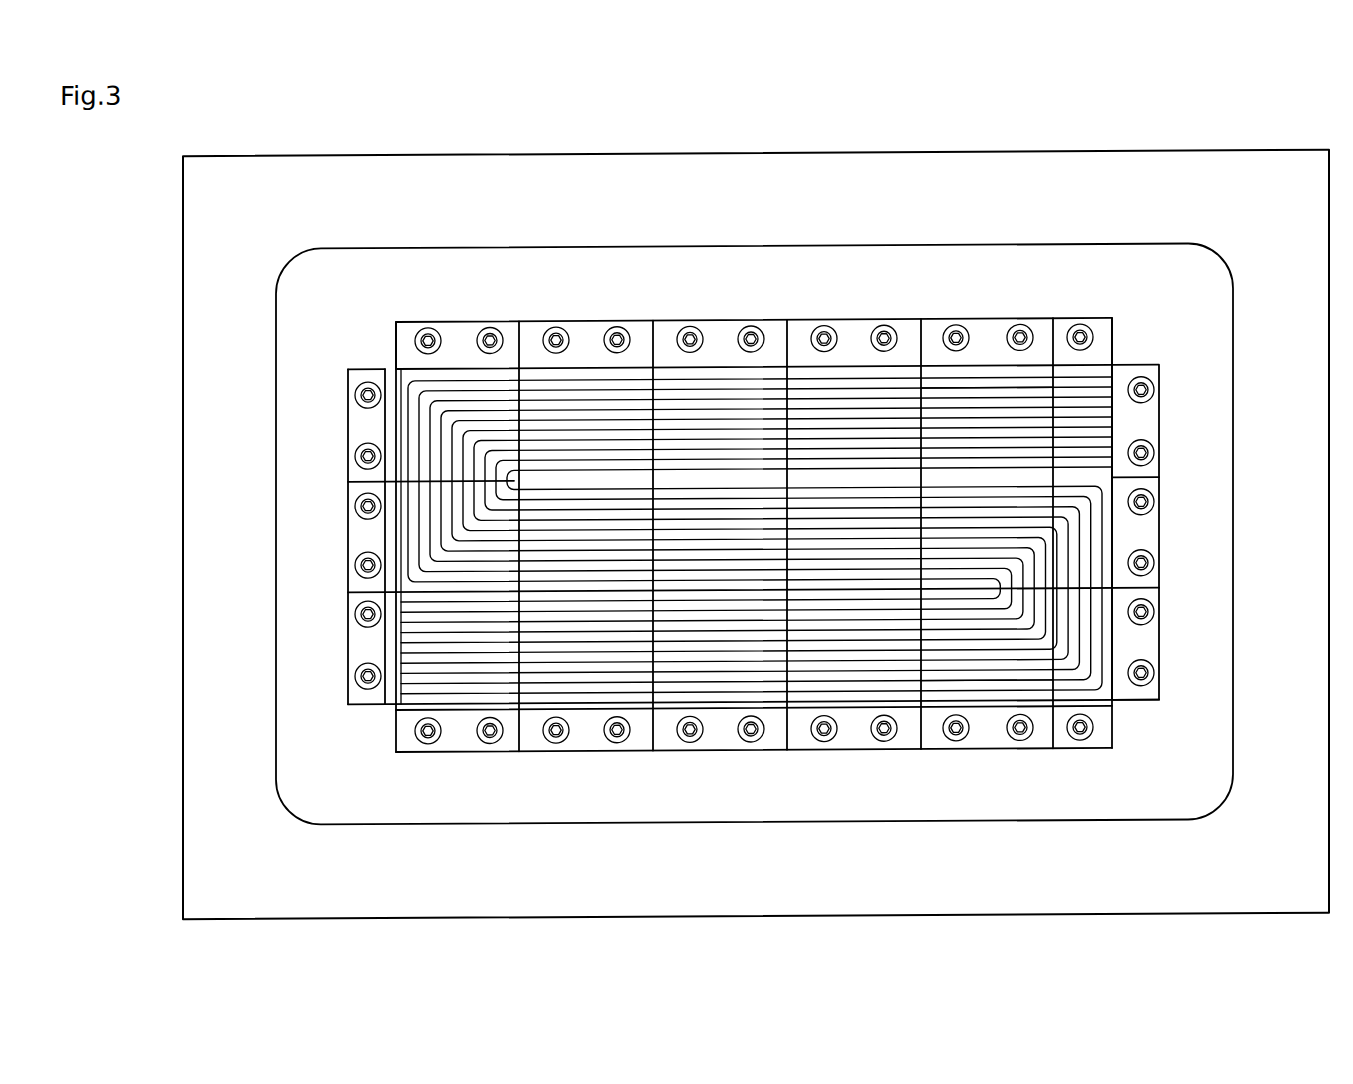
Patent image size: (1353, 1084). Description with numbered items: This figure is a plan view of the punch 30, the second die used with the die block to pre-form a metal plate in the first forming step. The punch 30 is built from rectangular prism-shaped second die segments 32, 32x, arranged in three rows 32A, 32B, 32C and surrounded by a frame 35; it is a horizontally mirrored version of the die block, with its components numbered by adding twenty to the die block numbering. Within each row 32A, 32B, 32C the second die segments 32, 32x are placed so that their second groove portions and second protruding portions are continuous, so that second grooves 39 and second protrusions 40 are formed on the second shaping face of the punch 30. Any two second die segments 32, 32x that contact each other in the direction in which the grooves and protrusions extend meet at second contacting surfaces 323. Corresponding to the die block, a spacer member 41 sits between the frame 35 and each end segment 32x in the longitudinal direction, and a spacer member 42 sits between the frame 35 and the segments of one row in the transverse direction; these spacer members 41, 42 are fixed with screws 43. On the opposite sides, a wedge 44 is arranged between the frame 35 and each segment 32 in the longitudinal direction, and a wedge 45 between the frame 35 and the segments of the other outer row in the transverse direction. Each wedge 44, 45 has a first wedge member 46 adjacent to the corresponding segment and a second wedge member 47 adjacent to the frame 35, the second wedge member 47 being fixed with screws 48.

The punch 30 is at (1100, 364).
The second die segment 32 is at (447, 379).
The row 32A is at (1105, 426).
The row 32B is at (1105, 542).
The row 32C is at (1105, 654).
The second die segment 32x is at (1066, 367).
The frame 35 is at (765, 154).
The second groove 39 is at (979, 384).
The second protrusion 40 is at (931, 387).
The spacer member 41 is at (1156, 563).
The spacer member 42 is at (680, 323).
The screw 43 is at (548, 323).
The wedge 44 is at (390, 326).
The wedge 45 is at (352, 718).
The first wedge member 46 is at (386, 369).
The second wedge member 47 is at (352, 369).
The screw 48 is at (352, 456).
The second contacting surface 323 is at (660, 568).